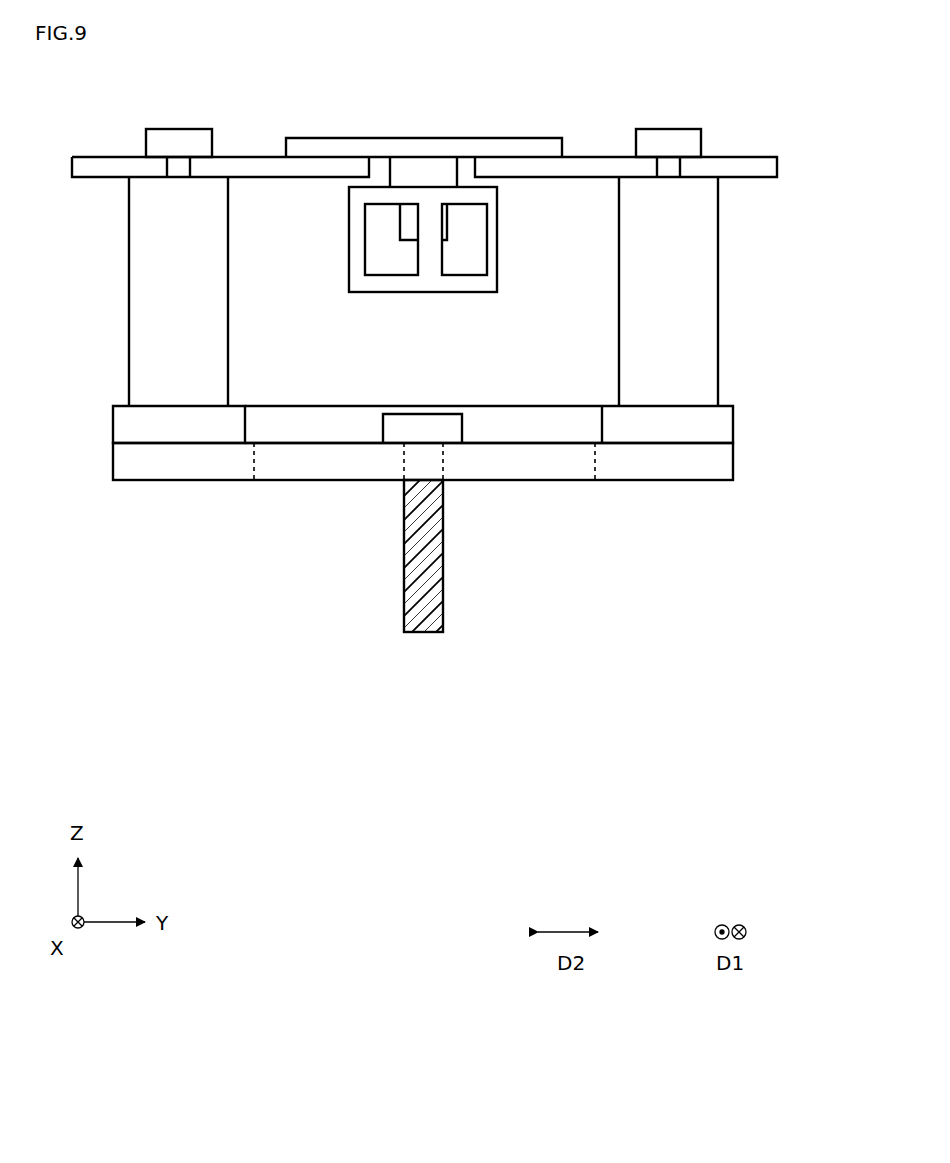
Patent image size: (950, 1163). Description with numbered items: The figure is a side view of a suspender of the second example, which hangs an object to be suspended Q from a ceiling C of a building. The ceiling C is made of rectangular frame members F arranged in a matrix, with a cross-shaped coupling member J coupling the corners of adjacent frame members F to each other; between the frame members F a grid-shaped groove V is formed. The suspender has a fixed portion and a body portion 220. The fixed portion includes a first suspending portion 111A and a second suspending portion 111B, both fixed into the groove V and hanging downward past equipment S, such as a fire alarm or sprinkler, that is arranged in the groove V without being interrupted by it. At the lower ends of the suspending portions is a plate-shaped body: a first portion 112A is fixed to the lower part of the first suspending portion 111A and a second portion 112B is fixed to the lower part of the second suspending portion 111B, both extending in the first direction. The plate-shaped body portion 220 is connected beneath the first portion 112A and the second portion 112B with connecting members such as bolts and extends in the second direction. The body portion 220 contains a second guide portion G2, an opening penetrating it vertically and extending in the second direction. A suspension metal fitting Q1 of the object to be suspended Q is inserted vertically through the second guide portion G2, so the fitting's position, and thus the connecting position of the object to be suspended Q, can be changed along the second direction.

The ceiling C is at (777, 154).
The groove V is at (250, 168).
The frame member F is at (108, 156).
The coupling member J is at (513, 145).
The first suspending portion 111A is at (148, 246).
The second suspending portion 111B is at (710, 243).
The equipment S is at (355, 283).
The first portion 112A is at (120, 424).
The second portion 112B is at (524, 422).
The body portion 220 is at (694, 468).
The second guide portion G2 is at (533, 468).
The suspension metal fitting Q1 is at (410, 515).
The object to be suspended Q is at (420, 645).